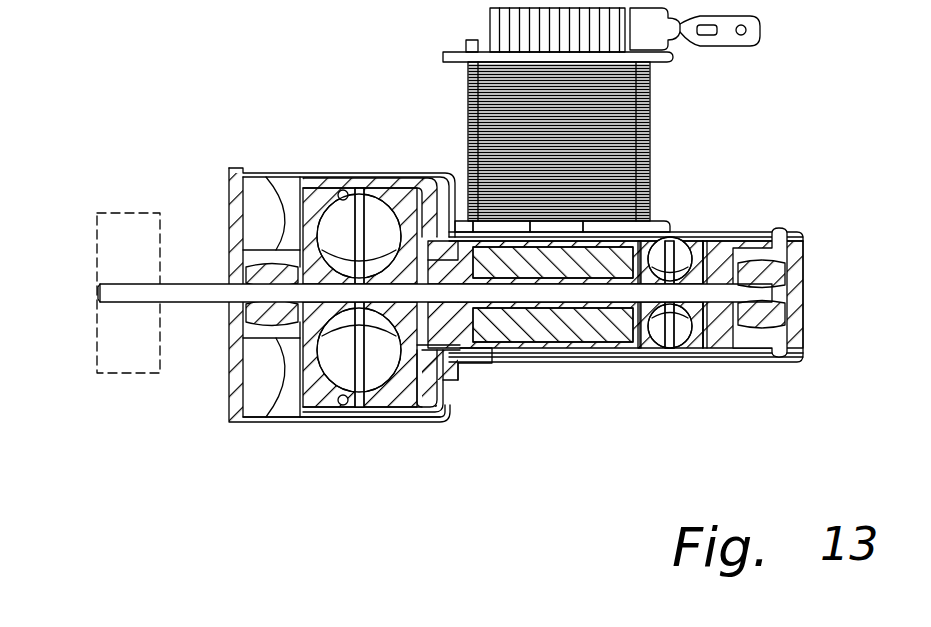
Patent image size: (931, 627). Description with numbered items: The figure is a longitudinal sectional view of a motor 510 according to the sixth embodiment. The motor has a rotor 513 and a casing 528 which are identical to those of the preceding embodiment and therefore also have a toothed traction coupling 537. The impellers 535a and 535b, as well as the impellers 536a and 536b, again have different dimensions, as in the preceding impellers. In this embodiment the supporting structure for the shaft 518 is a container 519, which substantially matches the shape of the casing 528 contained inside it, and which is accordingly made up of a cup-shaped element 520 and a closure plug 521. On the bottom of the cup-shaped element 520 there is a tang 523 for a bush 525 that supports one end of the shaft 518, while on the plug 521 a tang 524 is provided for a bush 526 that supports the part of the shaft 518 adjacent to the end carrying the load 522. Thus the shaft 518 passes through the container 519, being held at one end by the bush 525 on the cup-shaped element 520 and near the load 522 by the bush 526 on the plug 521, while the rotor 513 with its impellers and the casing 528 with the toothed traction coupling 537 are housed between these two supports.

The motor 510 is at (655, 126).
The rotor 513 is at (610, 235).
The shaft 518 is at (582, 300).
The container 519 is at (264, 426).
The cup-shaped element 520 is at (300, 424).
The closure plug 521 is at (230, 382).
The load 522 is at (137, 235).
The tang 523 is at (756, 250).
The tang 524 is at (283, 250).
The bush 525 is at (758, 318).
The bush 526 is at (260, 275).
The casing 528 is at (421, 420).
The impeller 535a is at (662, 327).
The impeller 535b is at (373, 372).
The impeller 536a is at (683, 330).
The impeller 536b is at (341, 227).
The toothed traction coupling 537 is at (467, 364).